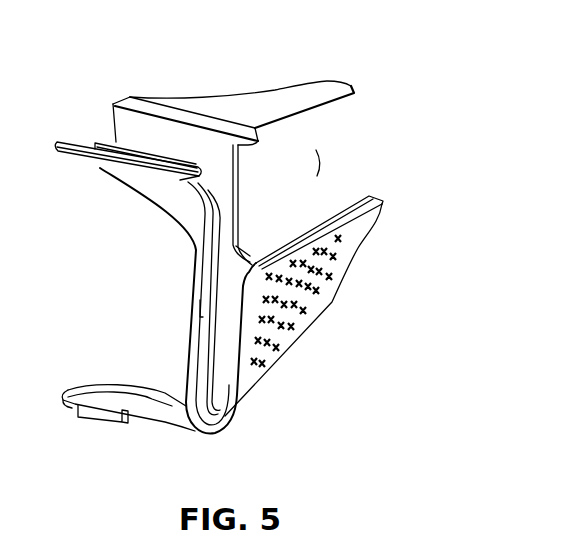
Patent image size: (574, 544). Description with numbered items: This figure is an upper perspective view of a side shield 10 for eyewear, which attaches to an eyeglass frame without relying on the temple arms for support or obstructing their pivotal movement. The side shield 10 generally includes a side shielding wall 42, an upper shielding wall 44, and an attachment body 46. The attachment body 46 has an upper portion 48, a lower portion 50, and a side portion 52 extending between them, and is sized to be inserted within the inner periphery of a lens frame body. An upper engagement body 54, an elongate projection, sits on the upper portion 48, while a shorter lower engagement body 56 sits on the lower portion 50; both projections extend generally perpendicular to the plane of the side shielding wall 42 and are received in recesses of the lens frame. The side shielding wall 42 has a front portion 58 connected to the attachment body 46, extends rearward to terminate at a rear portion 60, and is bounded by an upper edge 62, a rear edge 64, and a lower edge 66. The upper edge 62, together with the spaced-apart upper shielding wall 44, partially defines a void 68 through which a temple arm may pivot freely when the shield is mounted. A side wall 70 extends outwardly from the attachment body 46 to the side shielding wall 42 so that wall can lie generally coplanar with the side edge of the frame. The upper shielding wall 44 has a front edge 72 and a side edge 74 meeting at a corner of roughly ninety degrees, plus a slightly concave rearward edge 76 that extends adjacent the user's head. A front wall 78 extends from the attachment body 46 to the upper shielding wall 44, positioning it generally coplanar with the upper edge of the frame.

The side shield 10 is at (233, 97).
The side shielding wall 42 is at (336, 287).
The upper shielding wall 44 is at (267, 97).
The attachment body 46 is at (99, 168).
The upper portion 48 is at (138, 176).
The lower portion 50 is at (67, 402).
The side portion 52 is at (203, 302).
The upper engagement body 54 is at (122, 148).
The lower engagement body 56 is at (100, 418).
The front portion 58 is at (243, 380).
The rear portion 60 is at (359, 230).
The upper edge 62 is at (352, 196).
The rear edge 64 is at (362, 255).
The lower edge 66 is at (290, 353).
The void 68 is at (323, 163).
The side wall 70 is at (219, 391).
The front edge 72 is at (191, 130).
The side edge 74 is at (312, 120).
The rearward edge 76 is at (213, 98).
The front wall 78 is at (151, 131).